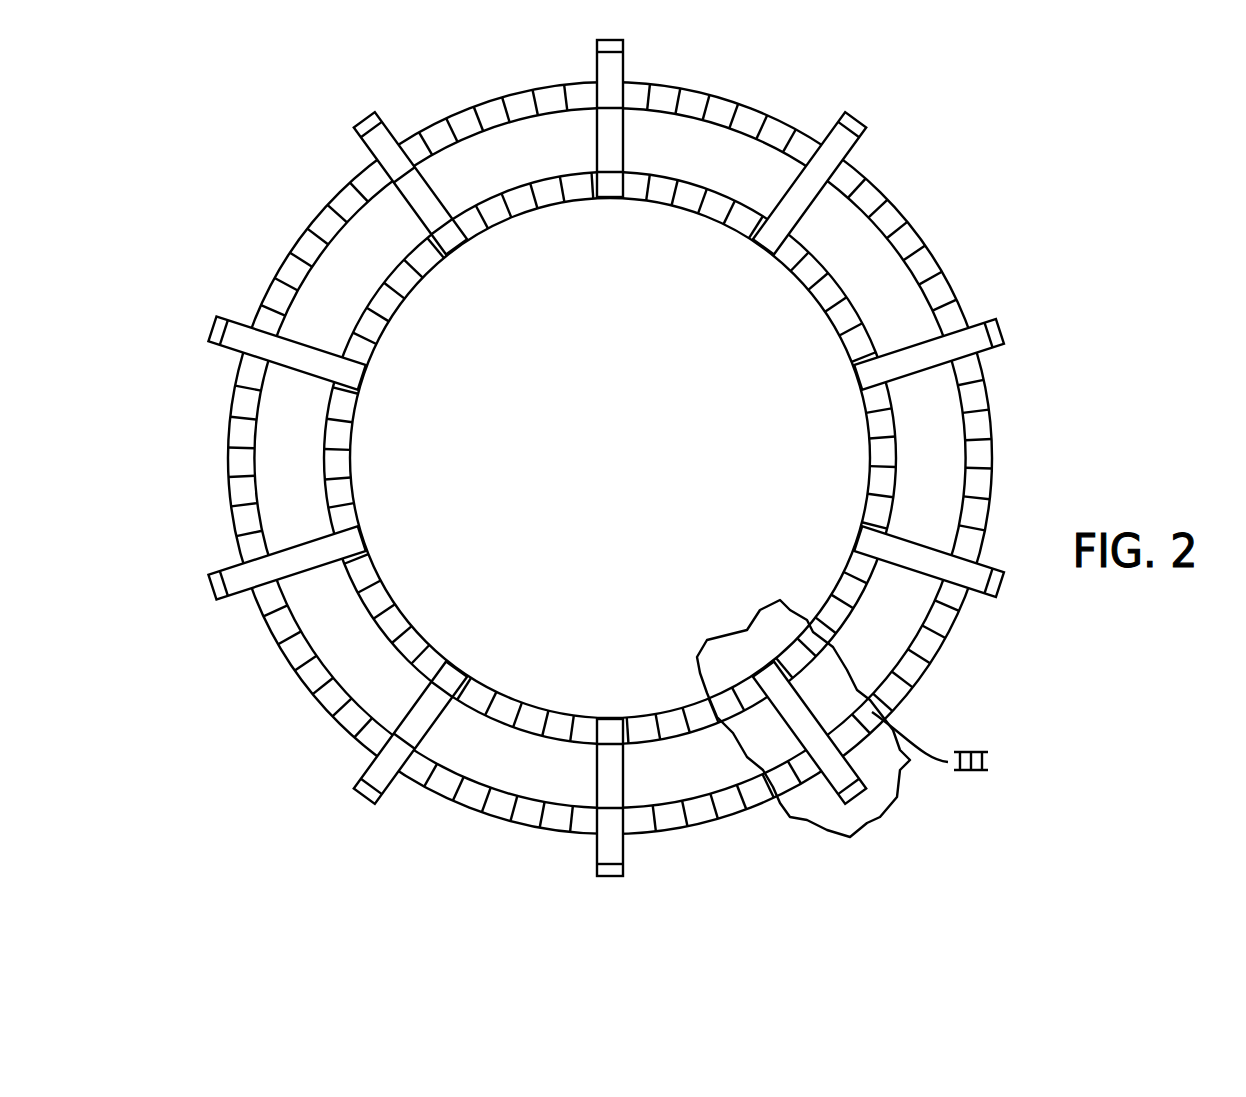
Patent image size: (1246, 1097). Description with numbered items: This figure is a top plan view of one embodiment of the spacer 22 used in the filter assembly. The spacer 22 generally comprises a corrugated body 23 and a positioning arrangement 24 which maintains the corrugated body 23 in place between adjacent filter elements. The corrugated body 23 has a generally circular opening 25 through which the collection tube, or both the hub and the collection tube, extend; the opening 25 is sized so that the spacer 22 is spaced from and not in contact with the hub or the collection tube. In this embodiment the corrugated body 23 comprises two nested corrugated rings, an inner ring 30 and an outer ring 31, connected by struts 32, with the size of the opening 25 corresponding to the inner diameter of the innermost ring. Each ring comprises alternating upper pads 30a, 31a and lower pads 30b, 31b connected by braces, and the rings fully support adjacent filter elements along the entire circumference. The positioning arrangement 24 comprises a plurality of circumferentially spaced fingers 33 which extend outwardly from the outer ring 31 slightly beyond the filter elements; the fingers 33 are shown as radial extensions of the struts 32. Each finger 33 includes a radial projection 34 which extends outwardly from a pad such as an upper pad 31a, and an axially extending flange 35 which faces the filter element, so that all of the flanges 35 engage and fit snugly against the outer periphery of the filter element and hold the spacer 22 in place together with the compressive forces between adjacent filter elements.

The spacer 22 is at (982, 205).
The corrugated body 23 is at (858, 470).
The positioning arrangement 24 is at (1000, 363).
The opening 25 is at (846, 340).
The inner ring 30 is at (748, 213).
The upper pads 30a is at (422, 277).
The lower pads 30b is at (358, 456).
The outer ring 31 is at (660, 103).
The upper pads 31a is at (310, 242).
The lower pads 31b is at (246, 380).
The struts 32 is at (601, 150).
The fingers 33 is at (614, 58).
The radial projection 34 is at (383, 132).
The flange 35 is at (355, 118).